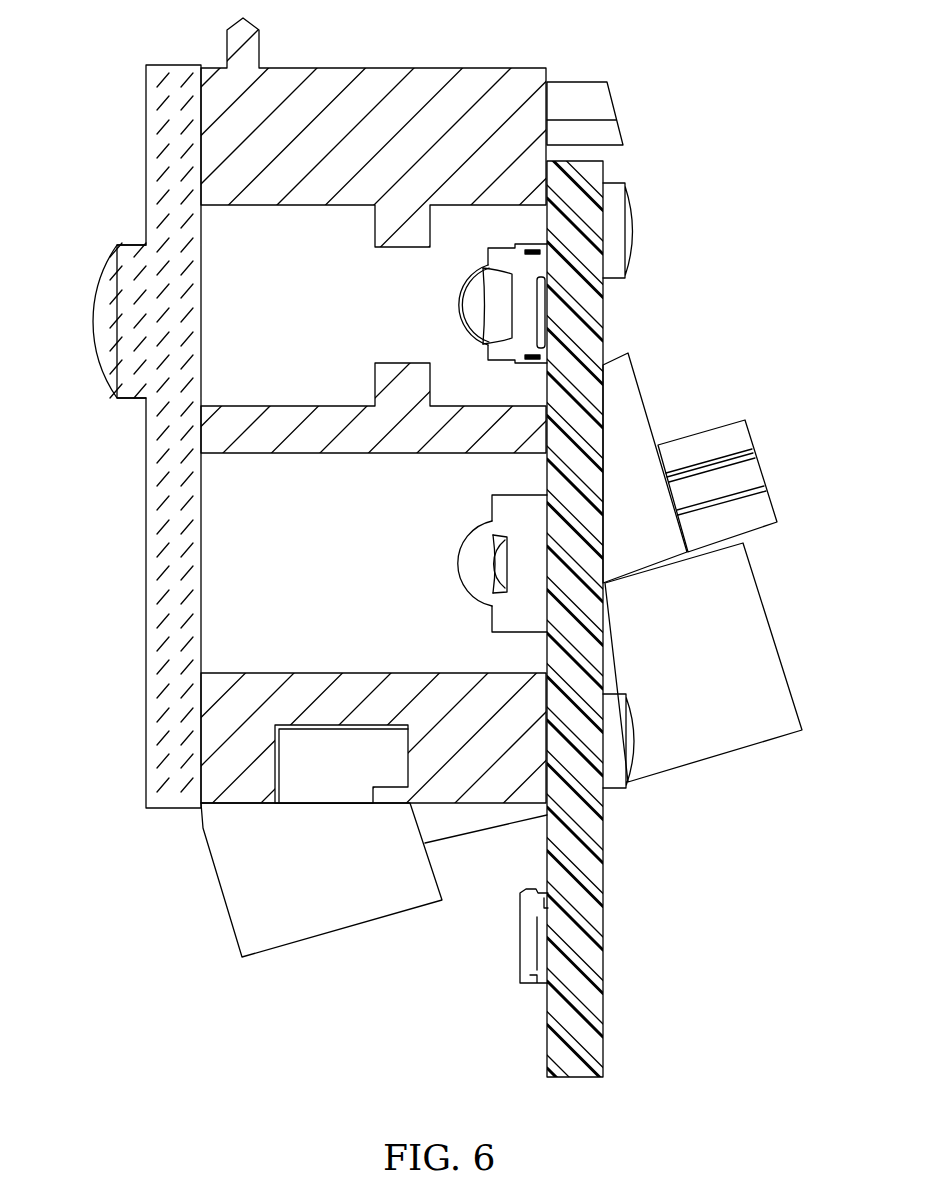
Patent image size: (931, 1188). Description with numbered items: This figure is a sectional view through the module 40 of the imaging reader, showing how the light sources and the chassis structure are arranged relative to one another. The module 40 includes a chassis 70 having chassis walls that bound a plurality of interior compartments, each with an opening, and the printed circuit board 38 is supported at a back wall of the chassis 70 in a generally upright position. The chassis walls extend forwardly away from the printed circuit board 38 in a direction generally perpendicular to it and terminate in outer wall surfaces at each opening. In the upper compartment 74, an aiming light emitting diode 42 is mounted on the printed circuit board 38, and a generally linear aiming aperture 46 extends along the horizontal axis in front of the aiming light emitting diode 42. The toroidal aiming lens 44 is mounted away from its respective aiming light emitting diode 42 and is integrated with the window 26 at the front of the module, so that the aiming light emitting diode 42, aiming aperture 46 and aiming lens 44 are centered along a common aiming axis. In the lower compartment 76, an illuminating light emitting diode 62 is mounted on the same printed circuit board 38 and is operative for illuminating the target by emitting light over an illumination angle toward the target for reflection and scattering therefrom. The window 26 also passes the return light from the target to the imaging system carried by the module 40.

The window 26 is at (183, 72).
The printed circuit board 38 is at (596, 168).
The module 40 is at (680, 54).
The aiming light emitting diode 42 is at (455, 310).
The toroidal aiming lens 44 is at (100, 322).
The aiming aperture 46 is at (398, 250).
The illuminating light emitting diode 62 is at (468, 570).
The chassis 70 is at (265, 932).
The aiming compartment 74 is at (262, 206).
The illuminating compartment 76 is at (378, 673).